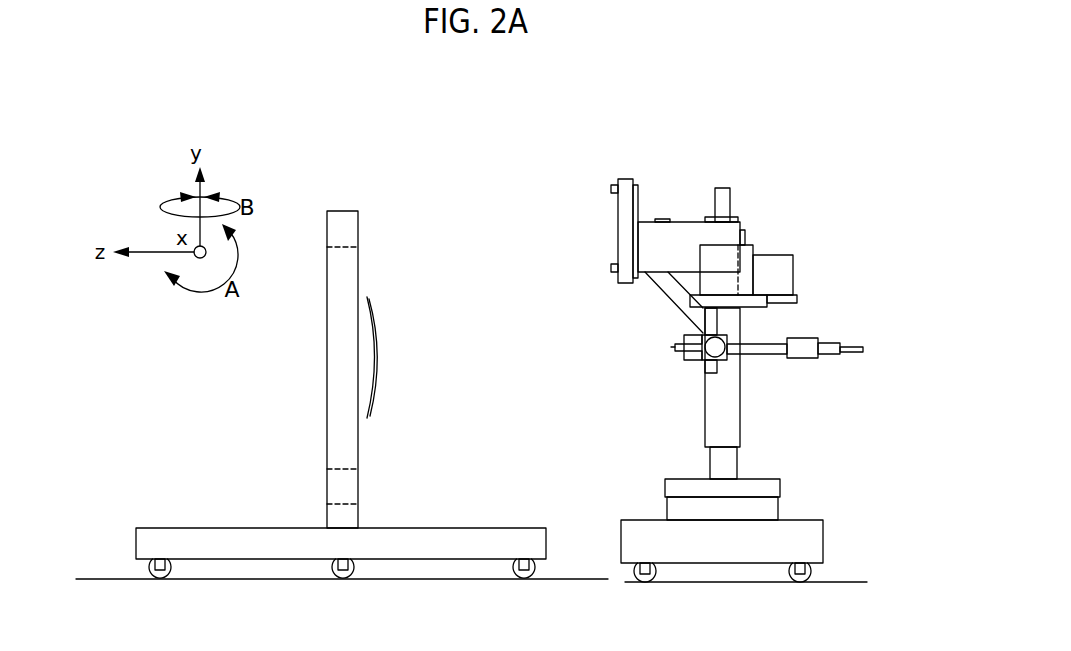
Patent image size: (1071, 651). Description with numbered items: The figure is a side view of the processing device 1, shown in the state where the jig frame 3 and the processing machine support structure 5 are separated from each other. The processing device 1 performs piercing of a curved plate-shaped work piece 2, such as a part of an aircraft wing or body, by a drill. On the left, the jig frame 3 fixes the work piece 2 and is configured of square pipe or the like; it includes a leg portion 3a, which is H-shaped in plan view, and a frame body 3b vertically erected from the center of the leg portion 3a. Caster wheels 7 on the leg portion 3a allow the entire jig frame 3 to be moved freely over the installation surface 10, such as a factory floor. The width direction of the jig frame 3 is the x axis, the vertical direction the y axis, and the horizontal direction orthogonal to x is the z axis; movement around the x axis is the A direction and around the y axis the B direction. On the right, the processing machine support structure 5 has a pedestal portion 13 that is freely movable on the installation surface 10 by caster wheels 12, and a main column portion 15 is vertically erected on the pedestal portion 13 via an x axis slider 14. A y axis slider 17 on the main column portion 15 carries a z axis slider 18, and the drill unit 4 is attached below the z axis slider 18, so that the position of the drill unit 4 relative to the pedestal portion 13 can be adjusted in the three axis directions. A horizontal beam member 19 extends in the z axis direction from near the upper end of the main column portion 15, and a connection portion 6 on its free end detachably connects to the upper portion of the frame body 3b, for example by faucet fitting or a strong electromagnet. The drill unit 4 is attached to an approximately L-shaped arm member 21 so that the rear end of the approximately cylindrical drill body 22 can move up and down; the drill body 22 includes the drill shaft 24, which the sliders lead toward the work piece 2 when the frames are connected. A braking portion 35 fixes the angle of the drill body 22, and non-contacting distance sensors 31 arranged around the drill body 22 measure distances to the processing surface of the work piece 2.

The processing device 1 is at (454, 130).
The work piece 2 is at (379, 343).
The jig frame 3 is at (341, 385).
The leg portion 3a is at (200, 527).
The frame body 3b is at (299, 369).
The drill unit 4 is at (758, 368).
The processing machine support structure 5 is at (828, 433).
The connection portion 6 is at (618, 240).
The caster wheels 7 is at (158, 580).
The installation surface 10 is at (99, 578).
The caster wheels 12 is at (645, 583).
The pedestal portion 13 is at (823, 540).
The x axis slider 14 is at (781, 489).
The main column portion 15 is at (710, 465).
The y axis slider 17 is at (705, 433).
The z axis slider 18 is at (762, 297).
The horizontal beam member 19 is at (680, 233).
The arm member 21 is at (748, 310).
The drill body 22 is at (809, 355).
The drill shaft 24 is at (678, 348).
The non-contacting distance sensors 31 is at (690, 338).
The braking portion 35 is at (717, 350).